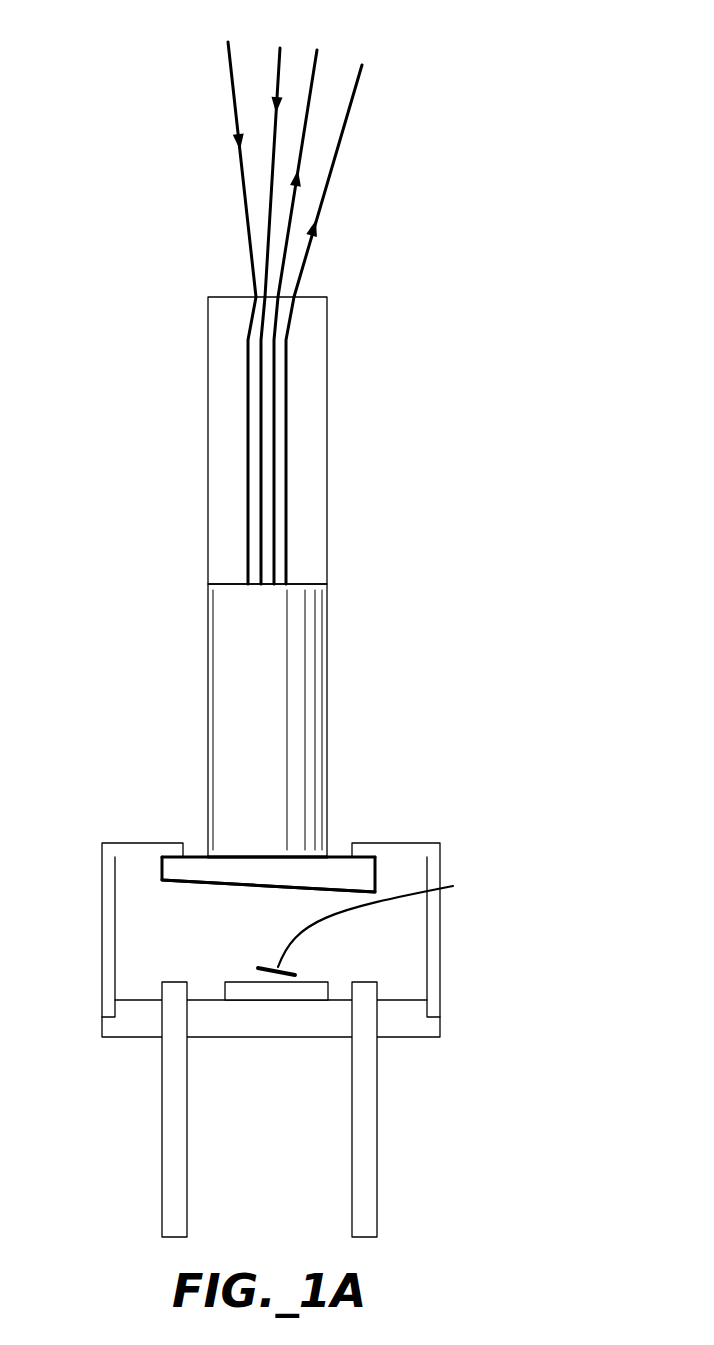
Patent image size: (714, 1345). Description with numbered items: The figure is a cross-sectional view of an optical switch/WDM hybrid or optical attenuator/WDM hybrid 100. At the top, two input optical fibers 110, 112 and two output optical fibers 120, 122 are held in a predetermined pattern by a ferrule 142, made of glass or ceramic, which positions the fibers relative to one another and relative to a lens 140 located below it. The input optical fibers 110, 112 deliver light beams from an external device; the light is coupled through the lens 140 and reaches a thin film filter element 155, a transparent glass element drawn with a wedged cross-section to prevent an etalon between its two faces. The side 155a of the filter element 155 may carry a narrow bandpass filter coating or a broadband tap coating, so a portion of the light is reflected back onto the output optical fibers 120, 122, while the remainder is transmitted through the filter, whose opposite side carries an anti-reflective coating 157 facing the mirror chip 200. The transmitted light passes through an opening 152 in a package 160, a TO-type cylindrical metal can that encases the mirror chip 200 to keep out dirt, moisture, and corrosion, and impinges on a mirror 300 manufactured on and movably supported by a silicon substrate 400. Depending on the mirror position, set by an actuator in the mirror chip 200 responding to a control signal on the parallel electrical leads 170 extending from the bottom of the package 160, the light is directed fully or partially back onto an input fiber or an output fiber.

The optical switch/WDM hybrid or optical attenuator/WDM hybrid 100 is at (468, 1070).
The input optical fiber 110 is at (227, 100).
The input optical fiber 112 is at (267, 47).
The output optical fiber 120 is at (330, 62).
The output optical fiber 122 is at (350, 152).
The lens 140 is at (343, 628).
The ferrule 142 is at (307, 417).
The opening 152 is at (338, 848).
The thin film filter element 155 is at (342, 872).
The side of the filter element 155a is at (265, 850).
The anti-reflective coating 157 is at (212, 887).
The package 160 is at (442, 975).
The electrical leads 170 is at (187, 1142).
The mirror chip 200 is at (218, 995).
The mirror 300 is at (387, 921).
The substrate 400 is at (308, 978).